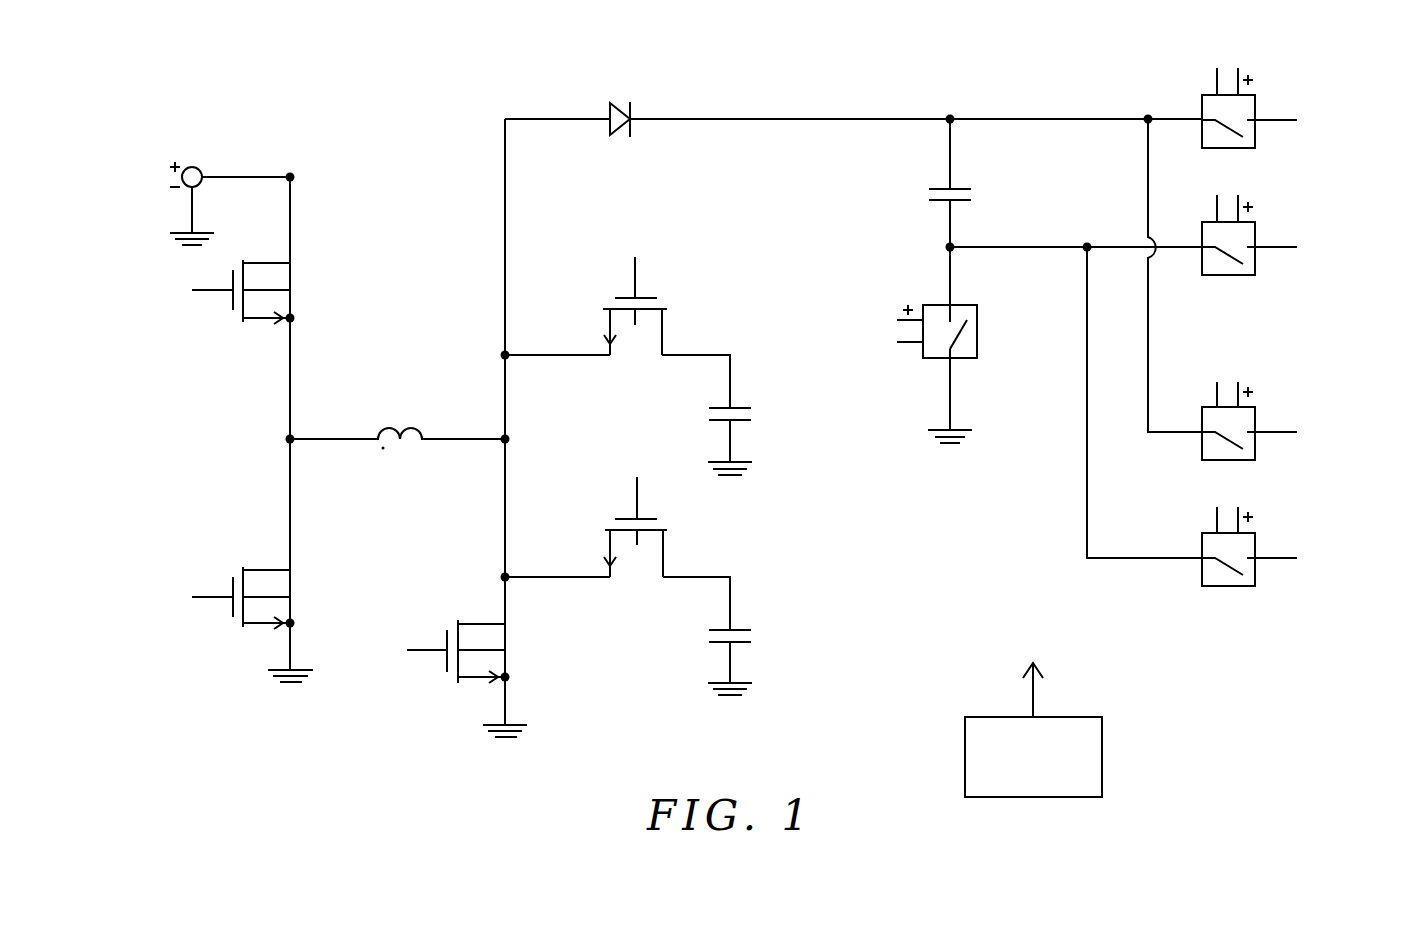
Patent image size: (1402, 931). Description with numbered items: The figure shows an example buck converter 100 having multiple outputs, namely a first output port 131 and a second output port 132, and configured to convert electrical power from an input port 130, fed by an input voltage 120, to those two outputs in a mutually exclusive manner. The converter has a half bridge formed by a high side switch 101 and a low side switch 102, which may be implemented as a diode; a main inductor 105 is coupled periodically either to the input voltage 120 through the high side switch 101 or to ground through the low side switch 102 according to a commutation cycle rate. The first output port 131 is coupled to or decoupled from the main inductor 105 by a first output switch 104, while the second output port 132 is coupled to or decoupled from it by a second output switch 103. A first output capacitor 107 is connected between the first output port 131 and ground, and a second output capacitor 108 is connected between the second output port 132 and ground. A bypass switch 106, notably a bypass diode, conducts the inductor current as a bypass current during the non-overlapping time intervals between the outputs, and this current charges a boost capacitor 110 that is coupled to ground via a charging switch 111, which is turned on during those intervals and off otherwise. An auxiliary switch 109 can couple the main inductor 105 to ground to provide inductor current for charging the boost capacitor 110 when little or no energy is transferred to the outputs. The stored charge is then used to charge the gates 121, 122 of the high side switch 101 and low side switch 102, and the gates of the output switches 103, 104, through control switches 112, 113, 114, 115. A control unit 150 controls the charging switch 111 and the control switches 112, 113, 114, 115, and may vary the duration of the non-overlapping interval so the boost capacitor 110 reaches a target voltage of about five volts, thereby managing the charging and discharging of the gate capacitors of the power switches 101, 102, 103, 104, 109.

The buck converter 100 is at (347, 113).
The high side switch 101 is at (280, 282).
The low side switch 102 is at (280, 587).
The second output switch 103 is at (630, 557).
The first output switch 104 is at (628, 337).
The main inductor 105 is at (402, 423).
The bypass switch 106 is at (637, 130).
The first output capacitor 107 is at (752, 415).
The second output capacitor 108 is at (750, 635).
The auxiliary switch 109 is at (495, 640).
The boost capacitor 110 is at (922, 195).
The charging switch 111 is at (900, 330).
The control switch 112 is at (1272, 132).
The control switch 113 is at (1272, 258).
The control switch 114 is at (1272, 443).
The control switch 115 is at (1272, 570).
The input voltage 120 is at (180, 170).
The gate of the high side switch 121 is at (198, 303).
The gate of the low side switch 122 is at (198, 608).
The input port 130 is at (294, 177).
The first output port 131 is at (732, 358).
The second output port 132 is at (735, 579).
The control unit 150 is at (1102, 733).